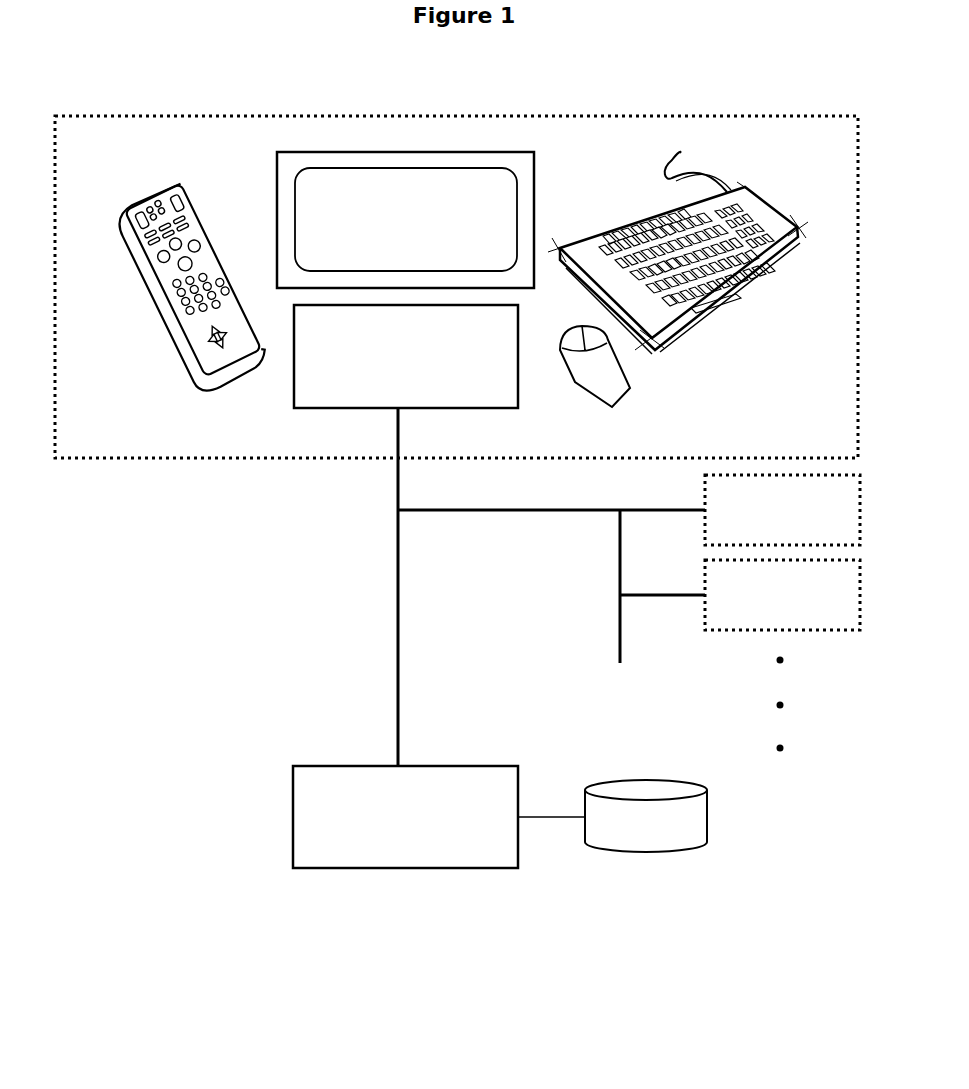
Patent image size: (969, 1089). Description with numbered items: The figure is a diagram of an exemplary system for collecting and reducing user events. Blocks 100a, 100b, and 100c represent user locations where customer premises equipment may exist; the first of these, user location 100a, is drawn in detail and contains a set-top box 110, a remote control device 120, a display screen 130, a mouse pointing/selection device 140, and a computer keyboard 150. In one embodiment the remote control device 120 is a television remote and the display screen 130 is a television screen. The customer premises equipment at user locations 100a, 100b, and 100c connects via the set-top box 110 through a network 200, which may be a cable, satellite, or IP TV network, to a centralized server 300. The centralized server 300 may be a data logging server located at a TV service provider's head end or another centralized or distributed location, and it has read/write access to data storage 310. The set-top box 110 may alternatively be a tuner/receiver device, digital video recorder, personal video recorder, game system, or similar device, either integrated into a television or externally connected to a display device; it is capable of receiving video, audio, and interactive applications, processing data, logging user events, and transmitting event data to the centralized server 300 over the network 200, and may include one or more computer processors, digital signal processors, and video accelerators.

The user location 100a is at (456, 287).
The user location 100b is at (782, 510).
The user location 100c is at (782, 595).
The set-top box 110 is at (264, 398).
The remote control device 120 is at (114, 298).
The display screen 130 is at (247, 162).
The mouse pointing/selection device 140 is at (649, 397).
The computer keyboard 150 is at (746, 318).
The network 200 is at (426, 567).
The centralized server 300 is at (266, 804).
The data storage 310 is at (734, 840).